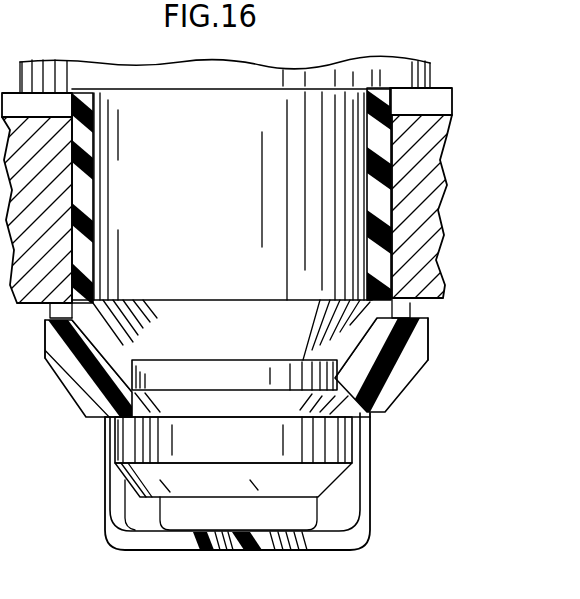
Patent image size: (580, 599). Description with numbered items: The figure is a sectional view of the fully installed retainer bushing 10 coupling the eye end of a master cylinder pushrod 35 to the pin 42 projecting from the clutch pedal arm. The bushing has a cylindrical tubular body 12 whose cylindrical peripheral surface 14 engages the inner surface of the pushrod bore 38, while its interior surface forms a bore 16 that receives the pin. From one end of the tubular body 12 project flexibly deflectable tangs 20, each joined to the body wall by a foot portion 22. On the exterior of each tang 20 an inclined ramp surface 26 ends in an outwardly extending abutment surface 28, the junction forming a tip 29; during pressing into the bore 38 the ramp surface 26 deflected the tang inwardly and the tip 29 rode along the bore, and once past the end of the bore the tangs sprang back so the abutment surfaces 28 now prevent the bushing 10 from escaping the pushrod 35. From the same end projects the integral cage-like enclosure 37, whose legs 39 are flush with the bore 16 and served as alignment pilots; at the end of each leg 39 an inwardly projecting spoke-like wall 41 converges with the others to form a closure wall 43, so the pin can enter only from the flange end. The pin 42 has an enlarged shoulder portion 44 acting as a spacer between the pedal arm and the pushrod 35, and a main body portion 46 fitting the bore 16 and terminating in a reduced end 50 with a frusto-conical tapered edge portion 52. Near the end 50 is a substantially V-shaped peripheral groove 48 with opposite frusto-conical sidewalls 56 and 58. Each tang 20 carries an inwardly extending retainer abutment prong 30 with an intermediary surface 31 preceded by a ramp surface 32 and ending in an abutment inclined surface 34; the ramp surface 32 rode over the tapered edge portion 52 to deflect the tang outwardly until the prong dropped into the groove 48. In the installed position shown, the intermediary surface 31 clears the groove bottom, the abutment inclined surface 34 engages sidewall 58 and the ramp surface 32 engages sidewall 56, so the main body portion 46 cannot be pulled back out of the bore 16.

The retainer bushing 10 is at (14, 86).
The cylindrical tubular body 12 is at (82, 150).
The cylindrical peripheral surface 14 is at (68, 187).
The bore 16 is at (93, 110).
The tangs 20 is at (90, 411).
The foot portion 22 is at (97, 282).
The ramp surface 26 is at (66, 389).
The abutment surface 28 is at (53, 312).
The tip 29 is at (44, 322).
The retainer abutment prong 30 is at (231, 357).
The intermediary surface 31 is at (330, 365).
The ramp surface 32 is at (117, 333).
The abutment inclined surface 34 is at (152, 388).
The pushrod 35 is at (76, 230).
The cage-like enclosure 37 is at (124, 554).
The bore 38 is at (80, 268).
The legs 39 is at (130, 513).
The spoke-like walls 41 is at (173, 543).
The pin 42 is at (294, 118).
The closure wall 43 is at (262, 554).
The enlarged shoulder portion 44 is at (165, 83).
The main body portion 46 is at (346, 106).
The peripheral groove 48 is at (252, 356).
The end 50 is at (117, 460).
The tapered edge portion 52 is at (186, 478).
The groove sidewall 56 is at (212, 307).
The groove sidewall 58 is at (253, 405).